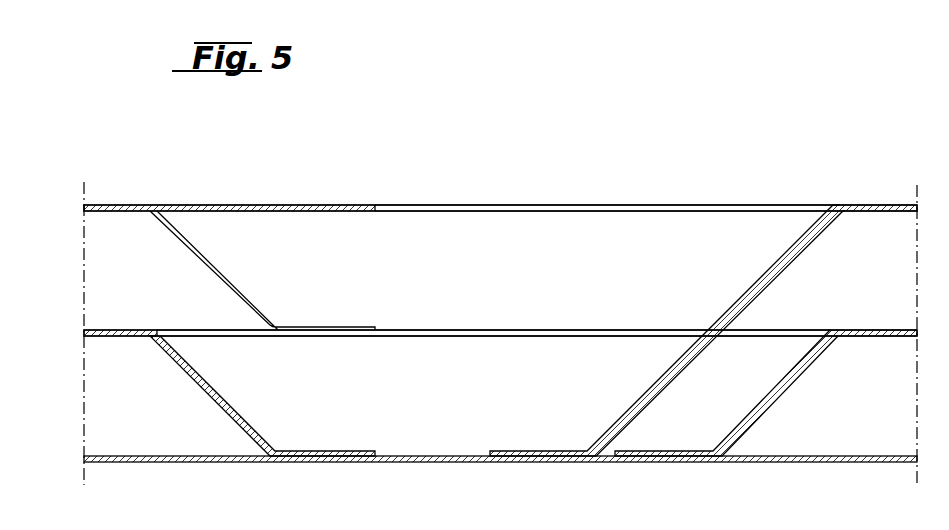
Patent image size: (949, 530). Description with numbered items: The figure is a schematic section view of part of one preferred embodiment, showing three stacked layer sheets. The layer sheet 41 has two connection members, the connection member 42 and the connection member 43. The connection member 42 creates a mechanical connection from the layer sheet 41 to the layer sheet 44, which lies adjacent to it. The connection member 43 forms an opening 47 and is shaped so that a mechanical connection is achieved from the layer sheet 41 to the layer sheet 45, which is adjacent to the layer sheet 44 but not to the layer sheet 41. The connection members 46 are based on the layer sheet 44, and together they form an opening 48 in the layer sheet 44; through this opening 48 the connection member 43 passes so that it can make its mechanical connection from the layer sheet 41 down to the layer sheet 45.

The layer sheet 41 is at (120, 205).
The connection member 42 is at (240, 298).
The connection member 43 is at (735, 302).
The layer sheet 44 is at (100, 330).
The layer sheet 45 is at (100, 456).
The connection members 46 is at (246, 425).
The opening 47 is at (596, 205).
The opening 48 is at (596, 330).